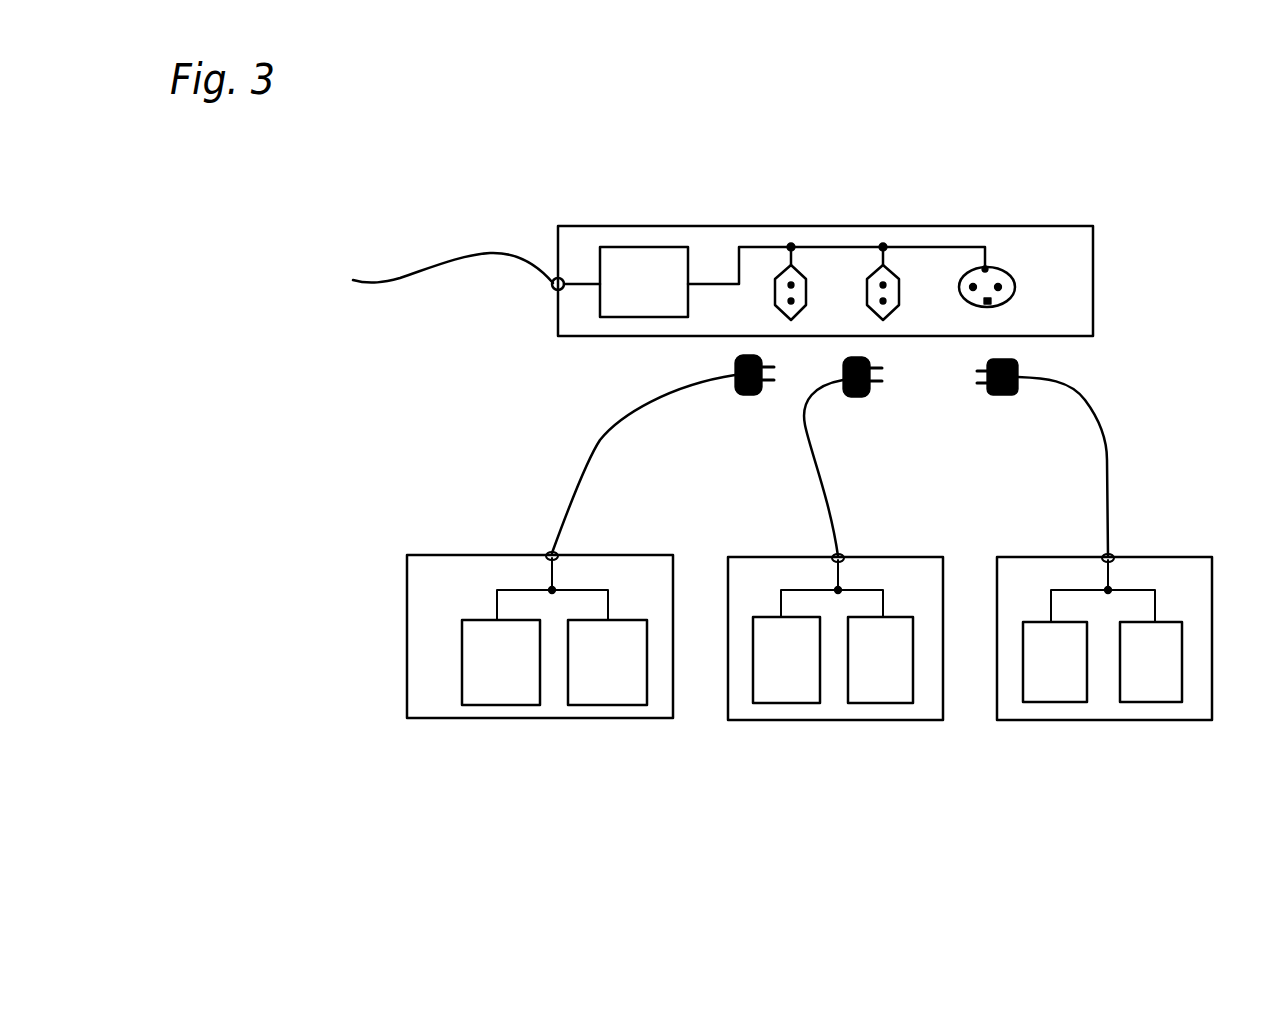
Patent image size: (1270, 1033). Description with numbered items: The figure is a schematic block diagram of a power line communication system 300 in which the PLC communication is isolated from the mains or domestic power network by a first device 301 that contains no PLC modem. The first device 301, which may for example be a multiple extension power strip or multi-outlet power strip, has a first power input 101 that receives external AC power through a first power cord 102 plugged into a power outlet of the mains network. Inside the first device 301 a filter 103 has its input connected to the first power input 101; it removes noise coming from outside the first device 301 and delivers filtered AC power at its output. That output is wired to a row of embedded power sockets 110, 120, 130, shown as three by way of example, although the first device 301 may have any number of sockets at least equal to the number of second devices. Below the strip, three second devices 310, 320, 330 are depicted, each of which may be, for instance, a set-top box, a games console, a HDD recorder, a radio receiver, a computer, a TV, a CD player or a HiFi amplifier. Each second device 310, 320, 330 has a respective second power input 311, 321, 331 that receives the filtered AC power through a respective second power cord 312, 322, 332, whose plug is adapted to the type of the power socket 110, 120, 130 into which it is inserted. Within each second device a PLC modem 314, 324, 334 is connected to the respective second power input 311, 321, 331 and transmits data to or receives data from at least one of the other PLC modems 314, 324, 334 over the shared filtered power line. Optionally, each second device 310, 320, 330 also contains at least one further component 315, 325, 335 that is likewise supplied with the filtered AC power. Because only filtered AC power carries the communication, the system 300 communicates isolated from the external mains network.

The power line communication system 300 is at (500, 123).
The first device 301 is at (812, 225).
The first power input 101 is at (551, 293).
The first power cord 102 is at (410, 272).
The filter 103 is at (642, 246).
The power socket 110 is at (788, 262).
The power socket 120 is at (893, 270).
The power socket 130 is at (1000, 268).
The second device 310 is at (500, 720).
The second power input 311 is at (548, 552).
The second power cord 312 is at (593, 463).
The PLC modem 314 is at (462, 663).
The further component 315 is at (622, 702).
The second device 320 is at (842, 722).
The second power input 321 is at (832, 554).
The second power cord 322 is at (827, 478).
The PLC modem 324 is at (778, 703).
The further component 325 is at (905, 703).
The second device 330 is at (1098, 723).
The second power input 331 is at (1112, 554).
The second power cord 332 is at (1105, 440).
The PLC modem 334 is at (1047, 703).
The further component 335 is at (1172, 703).